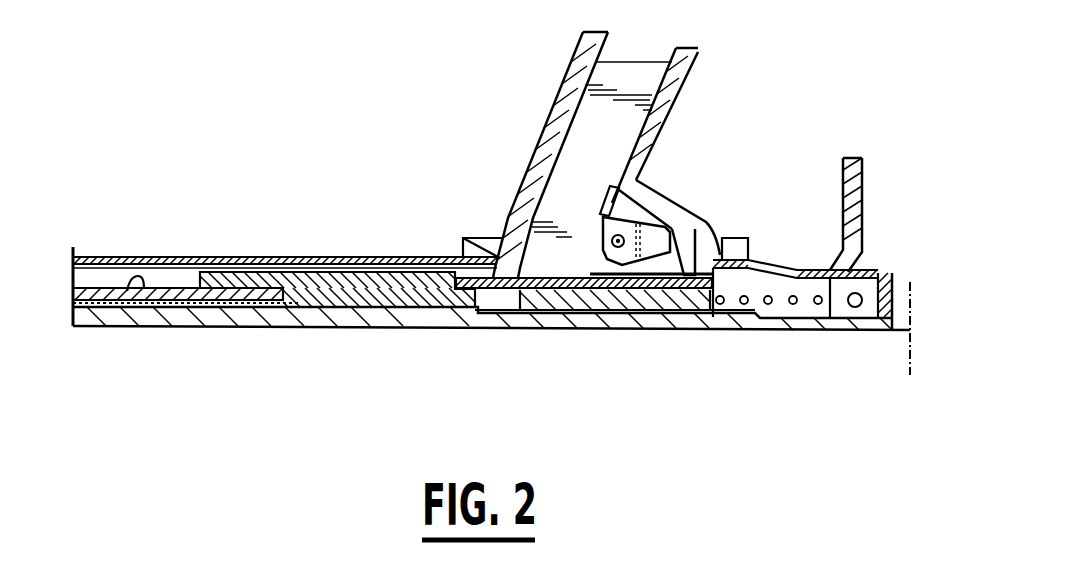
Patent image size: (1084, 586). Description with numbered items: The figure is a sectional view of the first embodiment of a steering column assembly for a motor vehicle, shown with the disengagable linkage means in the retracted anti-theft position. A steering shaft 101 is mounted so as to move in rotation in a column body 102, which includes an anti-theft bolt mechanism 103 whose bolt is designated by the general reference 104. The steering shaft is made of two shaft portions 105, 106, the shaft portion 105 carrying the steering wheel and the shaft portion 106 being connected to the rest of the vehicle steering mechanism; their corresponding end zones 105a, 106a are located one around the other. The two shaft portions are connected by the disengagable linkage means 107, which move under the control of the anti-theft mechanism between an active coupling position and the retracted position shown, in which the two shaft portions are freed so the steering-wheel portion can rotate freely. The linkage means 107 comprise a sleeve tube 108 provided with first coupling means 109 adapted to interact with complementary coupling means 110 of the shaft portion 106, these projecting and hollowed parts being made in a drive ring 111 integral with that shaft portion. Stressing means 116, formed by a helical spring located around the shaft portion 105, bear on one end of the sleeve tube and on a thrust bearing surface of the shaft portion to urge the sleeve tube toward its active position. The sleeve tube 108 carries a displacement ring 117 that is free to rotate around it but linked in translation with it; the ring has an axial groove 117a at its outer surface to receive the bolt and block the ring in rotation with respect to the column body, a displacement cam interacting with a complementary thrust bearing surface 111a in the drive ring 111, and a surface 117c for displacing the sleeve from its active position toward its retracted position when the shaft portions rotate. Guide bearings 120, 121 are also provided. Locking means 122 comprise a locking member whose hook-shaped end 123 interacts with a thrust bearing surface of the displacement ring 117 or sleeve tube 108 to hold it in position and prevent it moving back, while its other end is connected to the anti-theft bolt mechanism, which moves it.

The steering shaft 101 is at (162, 285).
The column body 102 is at (288, 255).
The anti-theft bolt mechanism 103 is at (563, 73).
The bolt 104 is at (588, 165).
The shaft portion 105 is at (413, 314).
The end zone 105a is at (248, 314).
The shaft portion 106 is at (100, 285).
The end zone 106a is at (143, 290).
The disengagable linkage means 107 is at (373, 243).
The sleeve tube 108 is at (630, 290).
The first coupling means 109 is at (520, 298).
The complementary coupling means 110 is at (675, 313).
The drive ring 111 is at (343, 283).
The complementary thrust bearing surface 111a is at (440, 262).
The stressing means 116 is at (793, 298).
The displacement ring 117 is at (582, 276).
The axial groove 117a is at (500, 265).
The displacing surface 117c is at (702, 298).
The guide bearing 120 is at (868, 297).
The guide bearing 121 is at (184, 300).
The locking means 122 is at (667, 212).
The hook-shaped end 123 is at (697, 252).